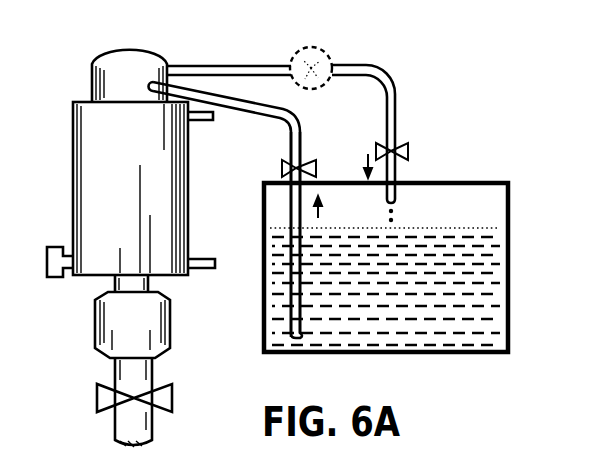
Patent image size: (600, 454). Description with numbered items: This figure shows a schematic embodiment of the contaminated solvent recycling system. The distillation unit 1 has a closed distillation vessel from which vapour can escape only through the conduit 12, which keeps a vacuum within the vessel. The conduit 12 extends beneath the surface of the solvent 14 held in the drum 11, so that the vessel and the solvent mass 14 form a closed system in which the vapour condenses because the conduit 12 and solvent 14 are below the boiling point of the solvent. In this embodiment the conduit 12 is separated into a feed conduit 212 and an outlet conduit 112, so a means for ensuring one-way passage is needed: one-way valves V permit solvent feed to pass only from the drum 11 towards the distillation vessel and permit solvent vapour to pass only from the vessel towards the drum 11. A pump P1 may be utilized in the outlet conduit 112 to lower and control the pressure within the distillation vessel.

The distillation unit 1 is at (62, 117).
The conduit 12 is at (208, 93).
The feed conduit 212 is at (287, 128).
The outlet conduit 112 is at (397, 97).
The pump P1 is at (323, 48).
The one-way valves V is at (317, 168).
The drum 11 is at (509, 274).
The solvent 14 is at (406, 313).